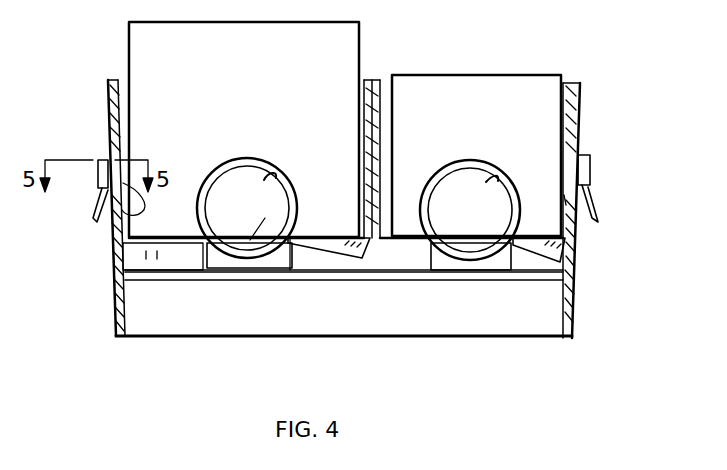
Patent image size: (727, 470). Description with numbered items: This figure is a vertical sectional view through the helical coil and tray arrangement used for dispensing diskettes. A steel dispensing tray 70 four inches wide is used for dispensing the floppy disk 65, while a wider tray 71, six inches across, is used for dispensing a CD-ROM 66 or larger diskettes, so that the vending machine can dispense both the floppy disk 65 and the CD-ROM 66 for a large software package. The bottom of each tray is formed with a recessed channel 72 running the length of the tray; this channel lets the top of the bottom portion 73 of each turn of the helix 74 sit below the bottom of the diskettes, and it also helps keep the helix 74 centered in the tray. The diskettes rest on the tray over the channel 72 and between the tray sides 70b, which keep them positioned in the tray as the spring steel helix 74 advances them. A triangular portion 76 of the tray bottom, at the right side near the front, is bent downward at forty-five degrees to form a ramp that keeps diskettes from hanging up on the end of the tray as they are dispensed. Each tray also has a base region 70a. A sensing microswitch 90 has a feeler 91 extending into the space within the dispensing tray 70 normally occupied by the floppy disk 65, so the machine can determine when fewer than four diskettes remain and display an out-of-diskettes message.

The floppy disk 65 is at (488, 87).
The CD-ROM 66 is at (142, 42).
The dispensing tray 70 is at (580, 96).
The housing base 70a is at (181, 247).
The tray sides 70b is at (374, 82).
The tray 71 is at (120, 100).
The recessed channel 72 is at (490, 282).
The bottom portion 73 is at (250, 242).
The helix 74 is at (250, 168).
The triangular portion 76 is at (328, 258).
The sensing microswitch 90 is at (100, 178).
The feeler 91 is at (142, 210).